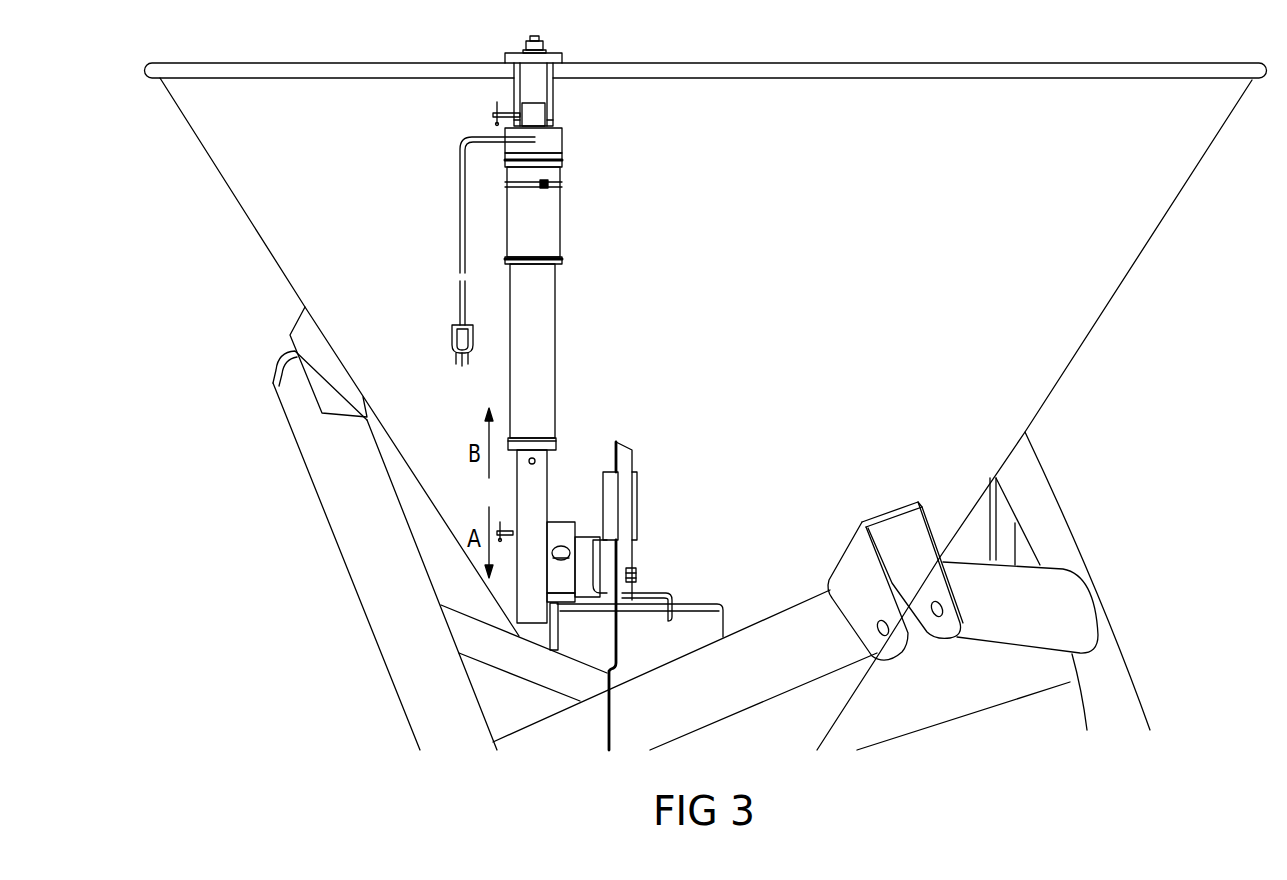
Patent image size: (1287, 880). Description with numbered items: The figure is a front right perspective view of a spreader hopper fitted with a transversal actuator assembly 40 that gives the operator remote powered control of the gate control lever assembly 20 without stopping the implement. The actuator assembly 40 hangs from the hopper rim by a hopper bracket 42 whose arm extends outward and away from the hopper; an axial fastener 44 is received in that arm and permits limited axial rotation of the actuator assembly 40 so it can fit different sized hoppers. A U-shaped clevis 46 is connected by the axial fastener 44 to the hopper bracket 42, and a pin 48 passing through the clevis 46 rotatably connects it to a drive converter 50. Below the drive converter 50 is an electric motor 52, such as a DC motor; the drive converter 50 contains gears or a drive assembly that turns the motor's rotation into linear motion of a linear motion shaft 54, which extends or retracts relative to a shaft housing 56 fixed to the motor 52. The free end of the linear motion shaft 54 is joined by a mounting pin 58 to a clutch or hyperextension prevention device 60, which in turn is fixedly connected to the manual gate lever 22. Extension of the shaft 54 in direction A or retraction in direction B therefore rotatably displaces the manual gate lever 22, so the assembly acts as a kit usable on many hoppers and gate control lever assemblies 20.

The gate control lever assembly 20 is at (644, 440).
The manual gate lever 22 is at (622, 503).
The transversal actuator assembly 40 is at (655, 271).
The hopper bracket 42 is at (553, 53).
The axial fastener 44 is at (530, 43).
The clevis 46 is at (551, 93).
The pin 48 is at (493, 115).
The drive converter 50 is at (555, 140).
The electric motor 52 is at (553, 238).
The linear motion shaft 54 is at (542, 480).
The shaft housing 56 is at (547, 360).
The mounting pin 58 is at (510, 527).
The hyperextension prevention device 60 is at (557, 527).